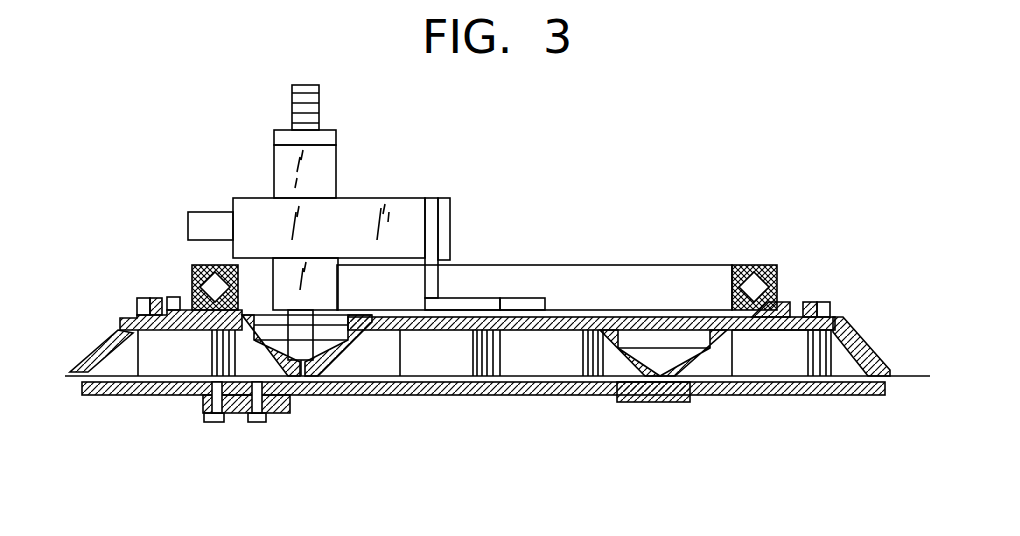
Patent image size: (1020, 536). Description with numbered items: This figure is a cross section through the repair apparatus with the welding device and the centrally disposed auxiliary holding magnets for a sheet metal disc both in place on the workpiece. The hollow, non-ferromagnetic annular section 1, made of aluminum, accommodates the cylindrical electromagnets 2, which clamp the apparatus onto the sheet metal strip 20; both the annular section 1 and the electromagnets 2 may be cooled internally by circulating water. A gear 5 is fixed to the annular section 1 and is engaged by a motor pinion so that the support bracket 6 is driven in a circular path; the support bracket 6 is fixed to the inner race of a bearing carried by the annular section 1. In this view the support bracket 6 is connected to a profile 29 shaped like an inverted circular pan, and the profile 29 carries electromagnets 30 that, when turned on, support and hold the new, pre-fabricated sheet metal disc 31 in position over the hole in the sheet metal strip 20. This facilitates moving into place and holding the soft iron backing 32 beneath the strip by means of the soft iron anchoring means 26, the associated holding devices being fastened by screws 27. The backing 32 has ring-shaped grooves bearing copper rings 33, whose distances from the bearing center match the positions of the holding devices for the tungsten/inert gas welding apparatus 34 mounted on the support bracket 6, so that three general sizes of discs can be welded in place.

The annular section 1 is at (868, 368).
The cylindrical electromagnets 2 is at (765, 363).
The gear 5 is at (809, 300).
The support bracket 6 is at (497, 278).
The sheet metal strip 20 is at (903, 377).
The soft iron anchoring means 26 is at (823, 383).
The screws 27 is at (215, 422).
The profile 29 is at (624, 345).
The electromagnets 30 is at (562, 343).
The sheet metal disc 31 is at (652, 348).
The backing 32 is at (465, 383).
The copper rings 33 is at (573, 387).
The tungsten/inert gas welding apparatus 34 is at (327, 131).